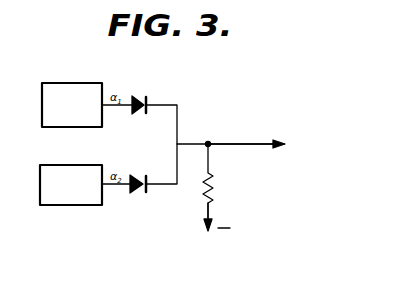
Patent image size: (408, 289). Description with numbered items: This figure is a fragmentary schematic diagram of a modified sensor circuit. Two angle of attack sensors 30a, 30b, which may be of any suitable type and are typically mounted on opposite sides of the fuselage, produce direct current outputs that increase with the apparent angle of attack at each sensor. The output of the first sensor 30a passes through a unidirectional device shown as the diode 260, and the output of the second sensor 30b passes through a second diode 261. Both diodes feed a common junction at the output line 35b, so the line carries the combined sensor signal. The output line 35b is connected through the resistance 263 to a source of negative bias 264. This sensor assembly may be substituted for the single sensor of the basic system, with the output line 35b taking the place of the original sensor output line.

The angle of attack sensor 30a is at (66, 128).
The angle of attack sensor 30b is at (70, 206).
The diode 260 is at (142, 95).
The diode 261 is at (140, 193).
The output line 35b is at (249, 143).
The resistance 263 is at (218, 187).
The source of negative bias 264 is at (219, 223).